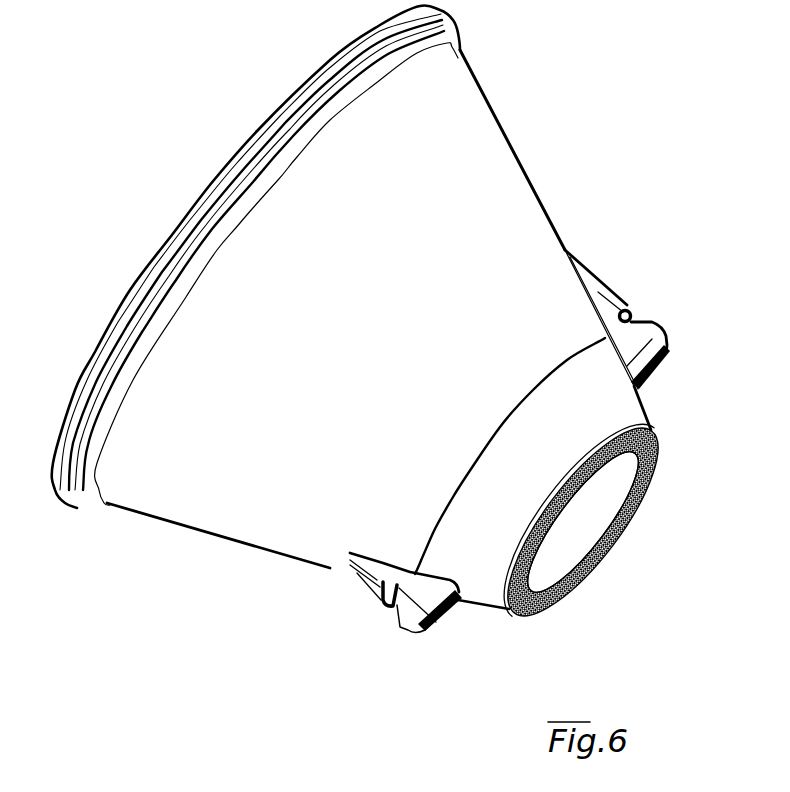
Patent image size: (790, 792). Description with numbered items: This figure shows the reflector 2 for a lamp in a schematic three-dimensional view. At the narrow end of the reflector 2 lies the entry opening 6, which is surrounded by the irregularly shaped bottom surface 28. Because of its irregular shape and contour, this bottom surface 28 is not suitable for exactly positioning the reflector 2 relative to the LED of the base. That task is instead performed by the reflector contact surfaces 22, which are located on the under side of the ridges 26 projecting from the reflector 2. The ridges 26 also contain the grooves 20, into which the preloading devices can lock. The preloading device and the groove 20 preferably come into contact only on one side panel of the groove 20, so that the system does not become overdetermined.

The reflector 2 is at (463, 118).
The entry opening 6 is at (590, 517).
The groove 20 is at (632, 320).
The reflector contact surface 22 is at (667, 366).
The ridge 26 is at (598, 292).
The bottom surface 28 is at (512, 612).